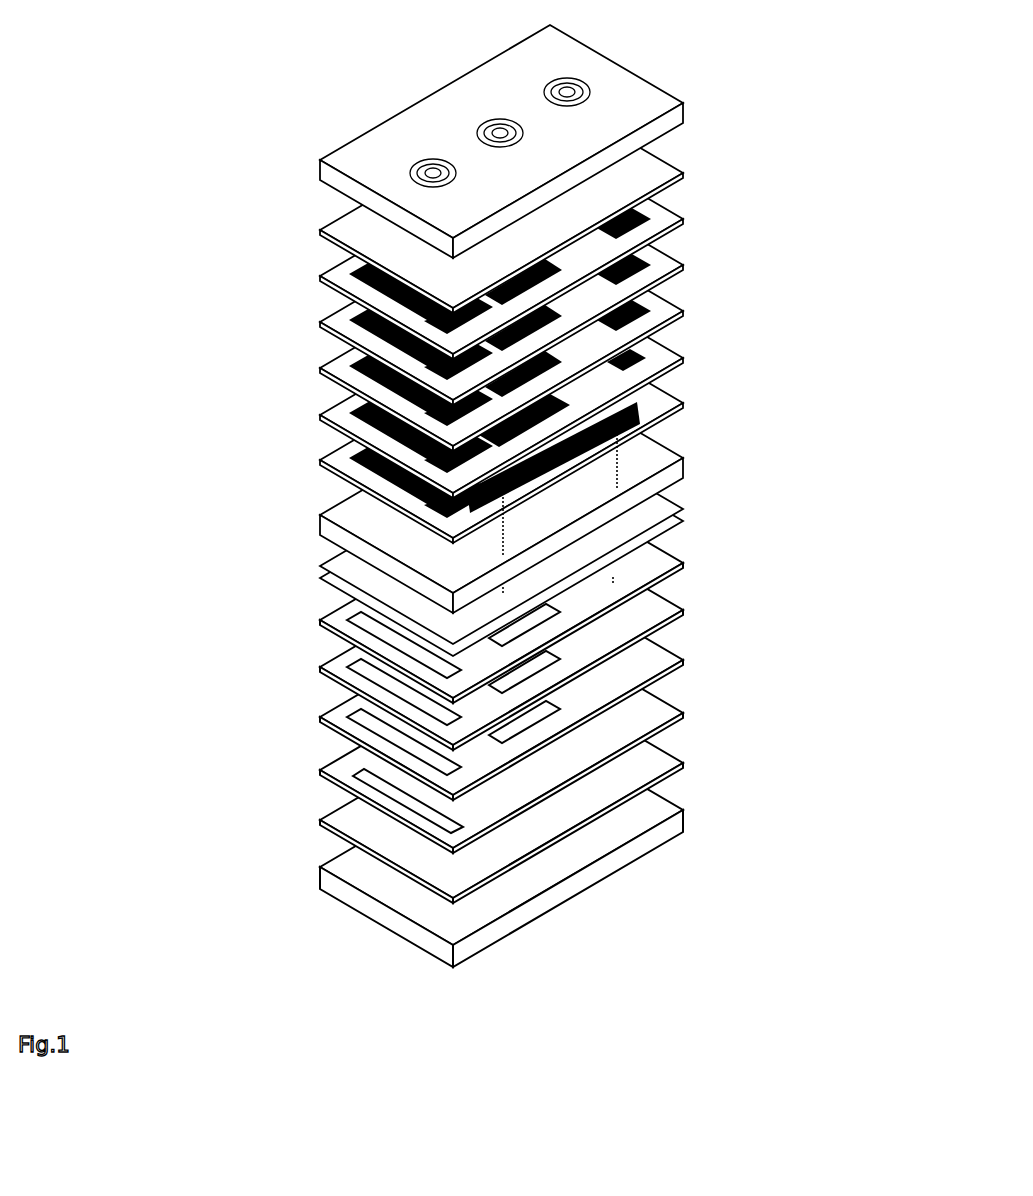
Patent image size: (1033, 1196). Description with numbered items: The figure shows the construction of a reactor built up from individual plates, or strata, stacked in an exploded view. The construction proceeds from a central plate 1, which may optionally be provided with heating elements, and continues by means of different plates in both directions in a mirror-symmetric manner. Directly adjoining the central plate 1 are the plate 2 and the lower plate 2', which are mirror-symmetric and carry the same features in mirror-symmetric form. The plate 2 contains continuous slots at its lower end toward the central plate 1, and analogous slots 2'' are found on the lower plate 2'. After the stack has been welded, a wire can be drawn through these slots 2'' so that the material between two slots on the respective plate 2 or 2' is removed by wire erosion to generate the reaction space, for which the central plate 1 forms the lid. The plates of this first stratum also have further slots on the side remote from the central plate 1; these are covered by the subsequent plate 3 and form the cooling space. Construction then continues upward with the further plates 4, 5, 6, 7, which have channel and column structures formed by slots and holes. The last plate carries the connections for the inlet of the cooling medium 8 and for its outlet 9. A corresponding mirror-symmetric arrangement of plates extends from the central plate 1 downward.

The central plate 1 is at (695, 460).
The plate 2 is at (407, 434).
The lower plate 2' is at (388, 549).
The slots 2'' is at (487, 537).
The plate 3 is at (695, 352).
The plate 4 is at (695, 310).
The plate 5 is at (695, 258).
The plate 6 is at (695, 205).
The plate 7 is at (700, 160).
The inlet of the cooling medium 8 is at (498, 102).
The outlet 9 is at (598, 78).